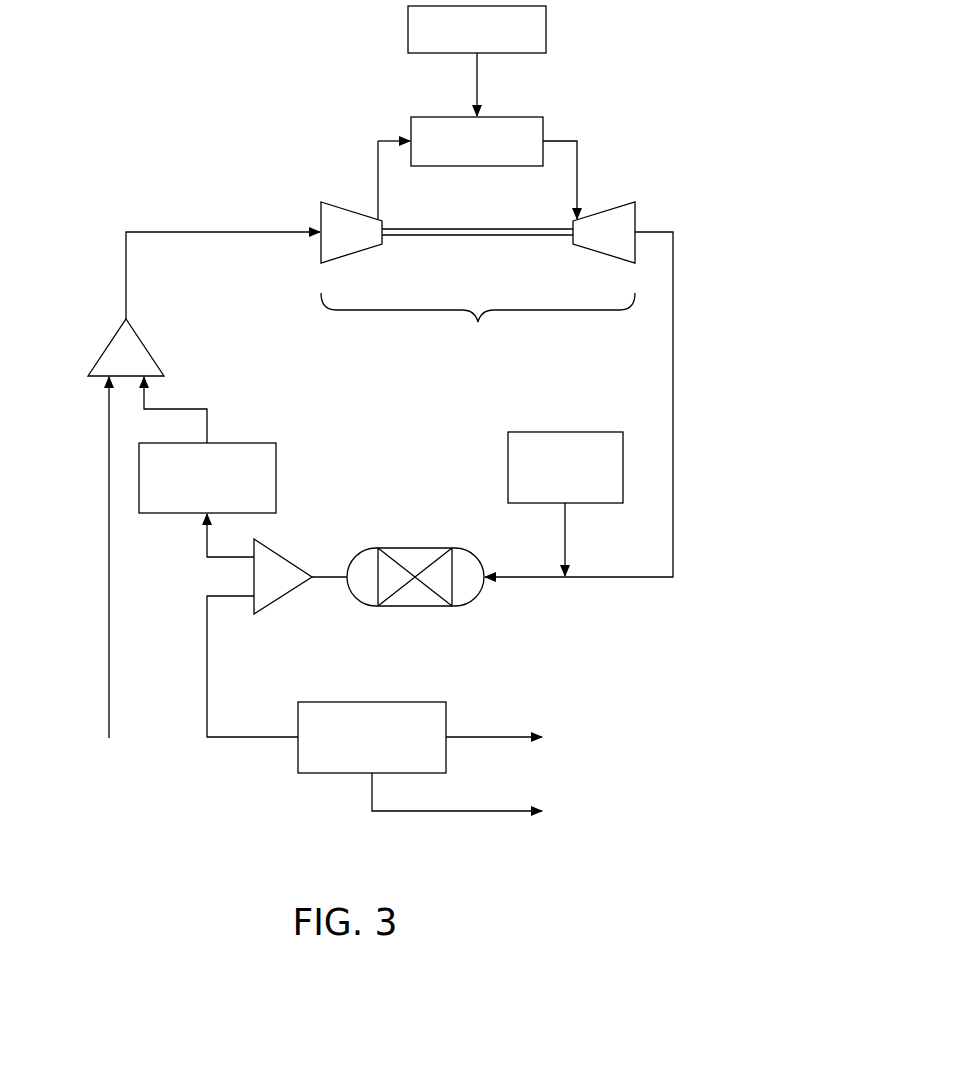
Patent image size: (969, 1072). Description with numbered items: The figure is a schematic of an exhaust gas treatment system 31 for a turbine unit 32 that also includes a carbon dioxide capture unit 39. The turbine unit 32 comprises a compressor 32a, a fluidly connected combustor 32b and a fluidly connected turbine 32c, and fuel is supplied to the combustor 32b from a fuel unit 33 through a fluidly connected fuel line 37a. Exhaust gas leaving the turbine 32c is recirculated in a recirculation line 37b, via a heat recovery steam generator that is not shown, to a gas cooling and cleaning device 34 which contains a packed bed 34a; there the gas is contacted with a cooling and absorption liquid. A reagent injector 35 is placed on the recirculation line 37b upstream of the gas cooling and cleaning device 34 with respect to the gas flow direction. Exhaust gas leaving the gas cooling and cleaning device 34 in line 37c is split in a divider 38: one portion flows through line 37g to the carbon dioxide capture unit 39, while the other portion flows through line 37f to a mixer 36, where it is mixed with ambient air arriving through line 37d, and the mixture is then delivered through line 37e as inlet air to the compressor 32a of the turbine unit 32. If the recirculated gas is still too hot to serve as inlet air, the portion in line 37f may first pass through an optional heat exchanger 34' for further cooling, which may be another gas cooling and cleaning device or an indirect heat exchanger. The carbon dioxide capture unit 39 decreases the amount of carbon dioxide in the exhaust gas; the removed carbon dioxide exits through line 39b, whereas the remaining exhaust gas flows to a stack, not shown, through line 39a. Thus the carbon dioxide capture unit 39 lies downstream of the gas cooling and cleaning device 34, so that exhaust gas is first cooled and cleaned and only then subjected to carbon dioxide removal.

The exhaust gas treatment system 31 is at (726, 142).
The turbine unit 32 is at (478, 289).
The compressor 32a is at (342, 227).
The combustor 32b is at (543, 125).
The turbine 32c is at (612, 227).
The fuel unit 33 is at (546, 30).
The gas cooling and cleaning device 34 is at (415, 571).
The packed bed 34a is at (414, 594).
The heat exchanger 34' is at (249, 445).
The reagent injector 35 is at (564, 430).
The mixer 36 is at (121, 352).
The fuel line 37a is at (477, 80).
The recirculation line 37b is at (673, 372).
The line 37c is at (331, 575).
The line 37d is at (108, 553).
The line 37e is at (126, 275).
The line 37f is at (224, 560).
The line 37g is at (207, 665).
The divider 38 is at (281, 586).
The CO2 capture unit 39 is at (322, 775).
The line 39a is at (490, 735).
The line 39b is at (455, 813).